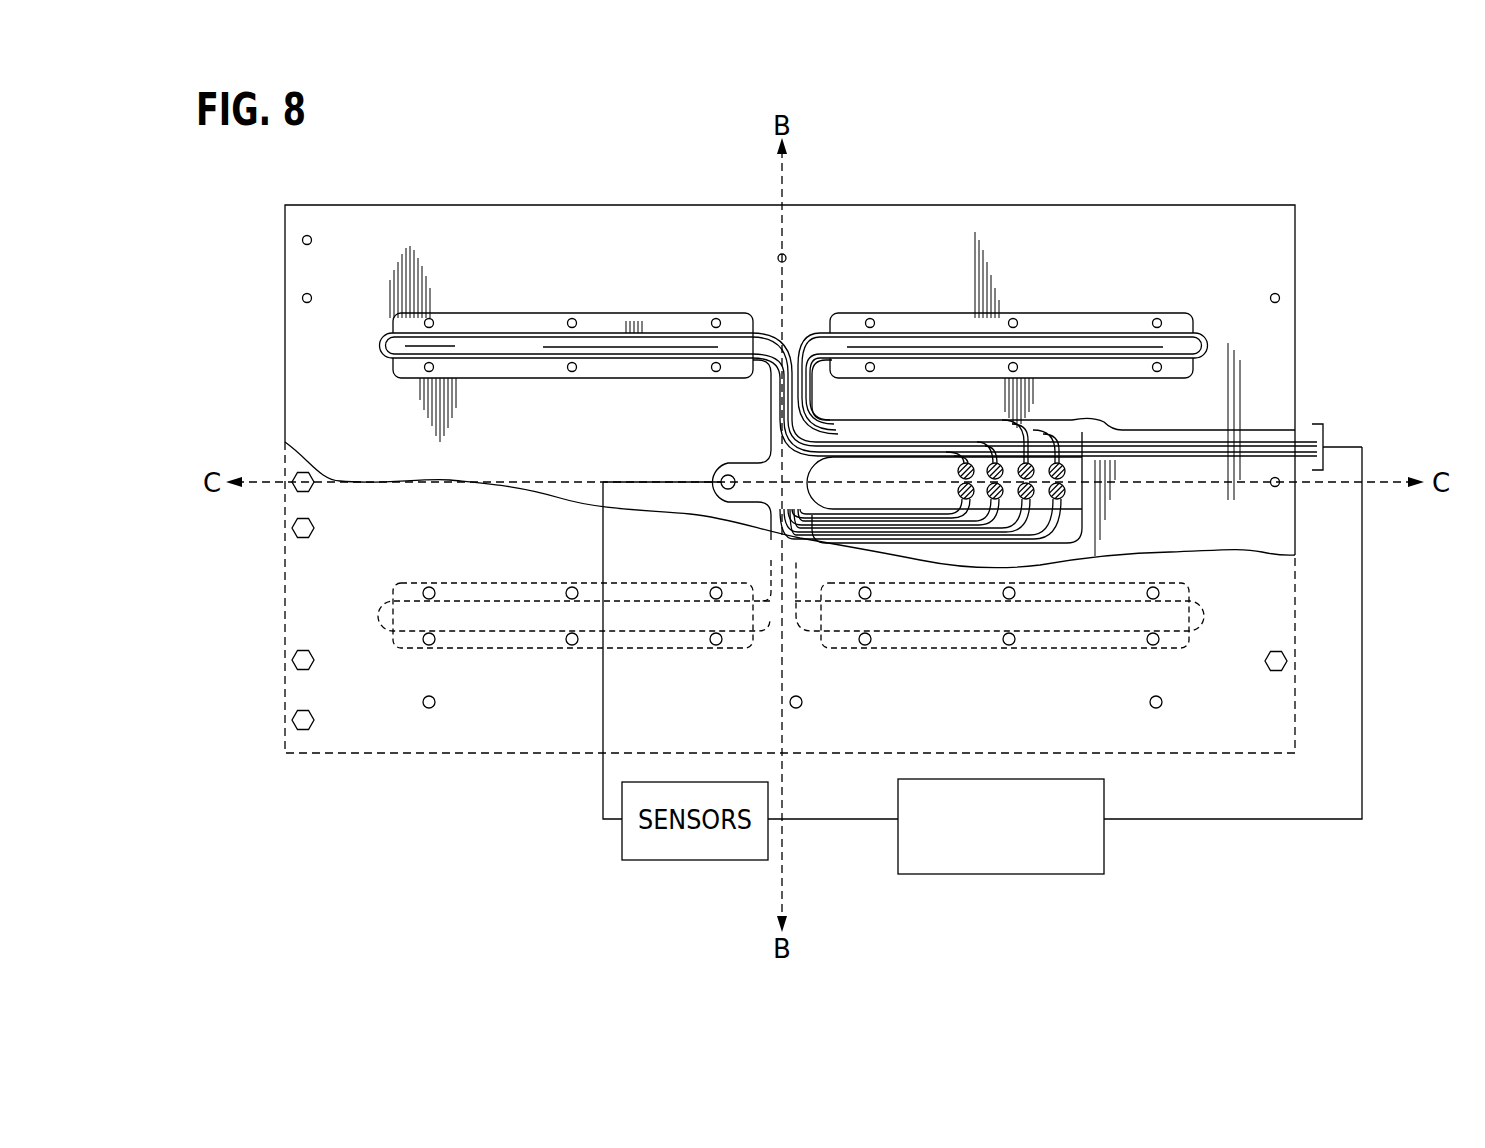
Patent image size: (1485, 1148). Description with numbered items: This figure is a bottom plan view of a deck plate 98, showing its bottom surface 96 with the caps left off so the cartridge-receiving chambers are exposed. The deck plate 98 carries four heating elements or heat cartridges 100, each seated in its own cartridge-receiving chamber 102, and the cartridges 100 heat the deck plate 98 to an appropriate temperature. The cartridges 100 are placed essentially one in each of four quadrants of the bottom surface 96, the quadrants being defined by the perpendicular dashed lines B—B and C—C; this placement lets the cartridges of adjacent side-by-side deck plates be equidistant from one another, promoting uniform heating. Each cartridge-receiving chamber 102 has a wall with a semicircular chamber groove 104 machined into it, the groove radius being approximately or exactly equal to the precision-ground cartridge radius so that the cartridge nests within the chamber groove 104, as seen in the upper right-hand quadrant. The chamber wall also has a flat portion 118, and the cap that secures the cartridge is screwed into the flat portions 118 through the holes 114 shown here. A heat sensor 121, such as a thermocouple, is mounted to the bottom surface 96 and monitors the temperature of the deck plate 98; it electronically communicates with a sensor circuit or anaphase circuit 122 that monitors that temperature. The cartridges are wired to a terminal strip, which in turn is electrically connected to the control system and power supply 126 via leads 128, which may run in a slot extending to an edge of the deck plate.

The bottom surface 96 is at (1206, 275).
The deck plate 98 is at (1255, 183).
The heat cartridge 100 is at (607, 340).
The cartridge-receiving chamber 102 is at (453, 347).
The chamber groove 104 is at (533, 359).
The holes 114 is at (1009, 319).
The flat portion 118 is at (408, 370).
The heat sensor 121 is at (725, 476).
The sensor circuit 122 is at (1040, 468).
The control system and power supply 126 is at (1000, 875).
The leads 128 is at (1316, 446).